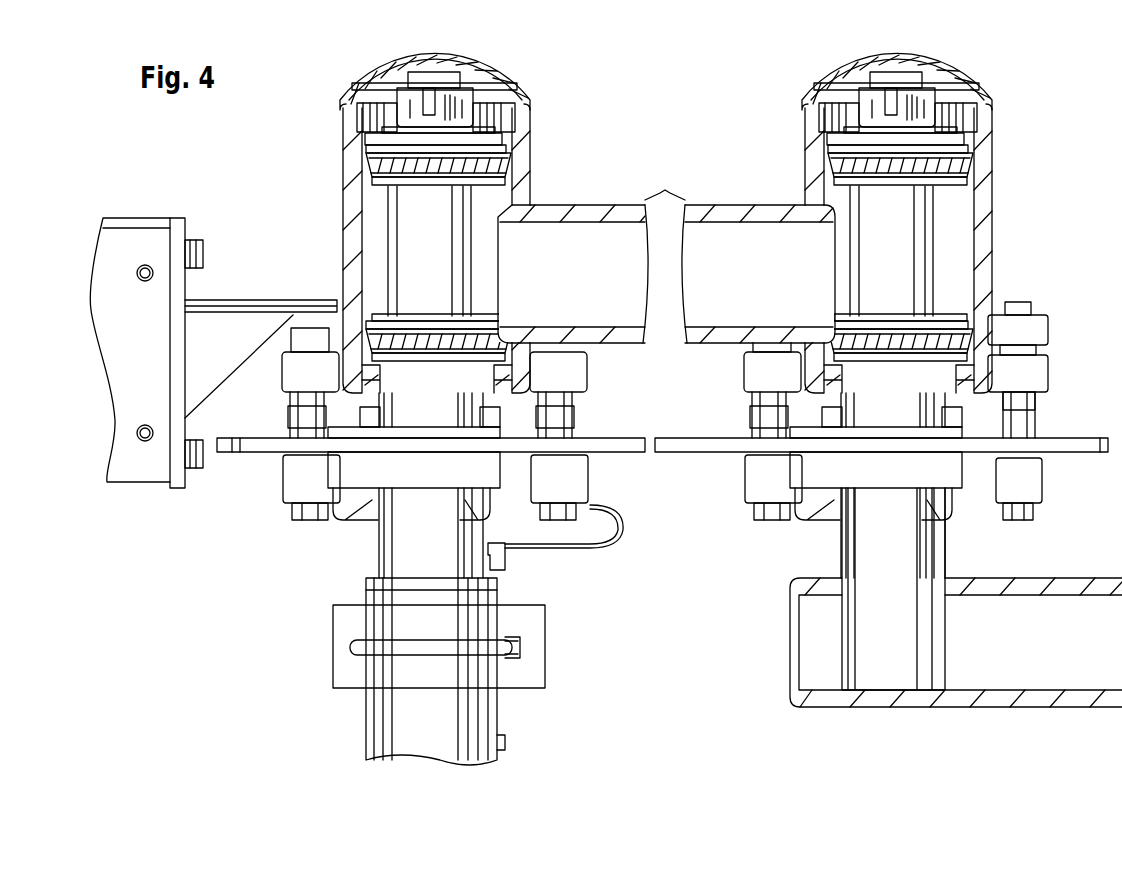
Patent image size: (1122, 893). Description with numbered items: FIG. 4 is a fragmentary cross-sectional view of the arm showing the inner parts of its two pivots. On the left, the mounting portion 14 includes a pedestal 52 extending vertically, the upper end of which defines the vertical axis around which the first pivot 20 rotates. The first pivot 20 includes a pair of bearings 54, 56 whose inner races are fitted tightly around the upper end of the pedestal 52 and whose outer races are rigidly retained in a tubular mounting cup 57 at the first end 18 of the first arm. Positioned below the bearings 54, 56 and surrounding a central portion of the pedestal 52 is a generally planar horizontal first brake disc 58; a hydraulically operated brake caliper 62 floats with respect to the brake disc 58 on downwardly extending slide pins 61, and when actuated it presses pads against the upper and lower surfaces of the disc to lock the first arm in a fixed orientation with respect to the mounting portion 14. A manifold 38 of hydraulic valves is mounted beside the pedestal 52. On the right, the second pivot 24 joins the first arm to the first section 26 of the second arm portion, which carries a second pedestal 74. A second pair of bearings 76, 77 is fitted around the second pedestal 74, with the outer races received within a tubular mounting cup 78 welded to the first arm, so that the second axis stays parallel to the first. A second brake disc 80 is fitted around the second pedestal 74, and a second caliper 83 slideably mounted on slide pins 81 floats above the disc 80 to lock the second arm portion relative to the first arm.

The mounting portion 14 is at (366, 743).
The first end of first arm portion 18 is at (630, 345).
The first pivot 20 is at (508, 77).
The second pivot 24 is at (998, 95).
The first section of second arm portion 26 is at (985, 707).
The manifold 38 is at (130, 218).
The pedestal 52 is at (388, 215).
The bearing 54 is at (495, 165).
The bearing 56 is at (382, 300).
The tubular mounting cup 57 is at (343, 140).
The first brake disc 58 is at (252, 465).
The slide pins 61 is at (575, 350).
The brake caliper 62 is at (288, 505).
The second pedestal 74 is at (838, 548).
The bearing 76 is at (960, 183).
The bearing 77 is at (940, 322).
The tubular mounting cup 78 is at (805, 143).
The second brake disc 80 is at (1075, 455).
The slide pins 81 is at (1032, 345).
The brake caliper 83 is at (1040, 372).